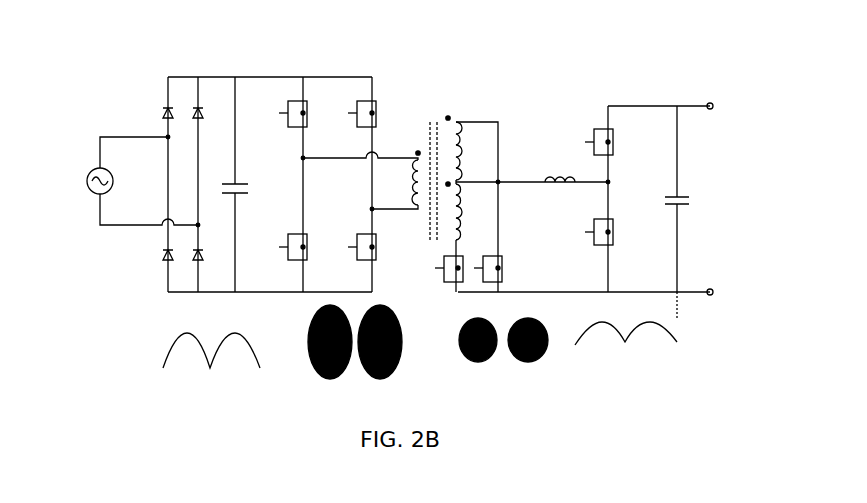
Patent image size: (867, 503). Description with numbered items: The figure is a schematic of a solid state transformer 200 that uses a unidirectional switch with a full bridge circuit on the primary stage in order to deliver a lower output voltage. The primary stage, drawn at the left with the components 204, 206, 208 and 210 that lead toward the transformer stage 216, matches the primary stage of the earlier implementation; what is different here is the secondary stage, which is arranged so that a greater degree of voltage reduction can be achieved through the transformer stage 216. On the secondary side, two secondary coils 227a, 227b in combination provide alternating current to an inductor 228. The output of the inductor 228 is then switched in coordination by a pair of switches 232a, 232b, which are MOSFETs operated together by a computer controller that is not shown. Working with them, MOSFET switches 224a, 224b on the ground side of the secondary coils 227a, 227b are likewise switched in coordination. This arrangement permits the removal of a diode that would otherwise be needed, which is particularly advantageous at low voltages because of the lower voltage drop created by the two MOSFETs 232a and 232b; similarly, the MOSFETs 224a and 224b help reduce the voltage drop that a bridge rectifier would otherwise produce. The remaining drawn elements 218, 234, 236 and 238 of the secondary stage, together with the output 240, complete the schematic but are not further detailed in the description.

The power converter system 200 is at (114, 95).
The bridge rectifier 204 is at (222, 68).
The input capacitor C1 206 is at (245, 183).
The inverter switching stage 208 is at (373, 66).
The transformer 210 is at (387, 92).
The transformer stage 216 is at (85, 172).
The output rectifier stage 218 is at (424, 61).
The MOSFET switch 224a is at (510, 265).
The MOSFET switch 224b is at (440, 272).
The secondary coil 227a is at (458, 128).
The secondary coil 227b is at (468, 210).
The inductor 228 is at (546, 177).
The switch 232a is at (622, 142).
The switch 232b is at (612, 246).
The output capacitor C2 234 is at (689, 196).
The positive output terminal 236 is at (714, 104).
The negative output terminal 238 is at (714, 289).
The output voltage waveform 240 is at (668, 322).